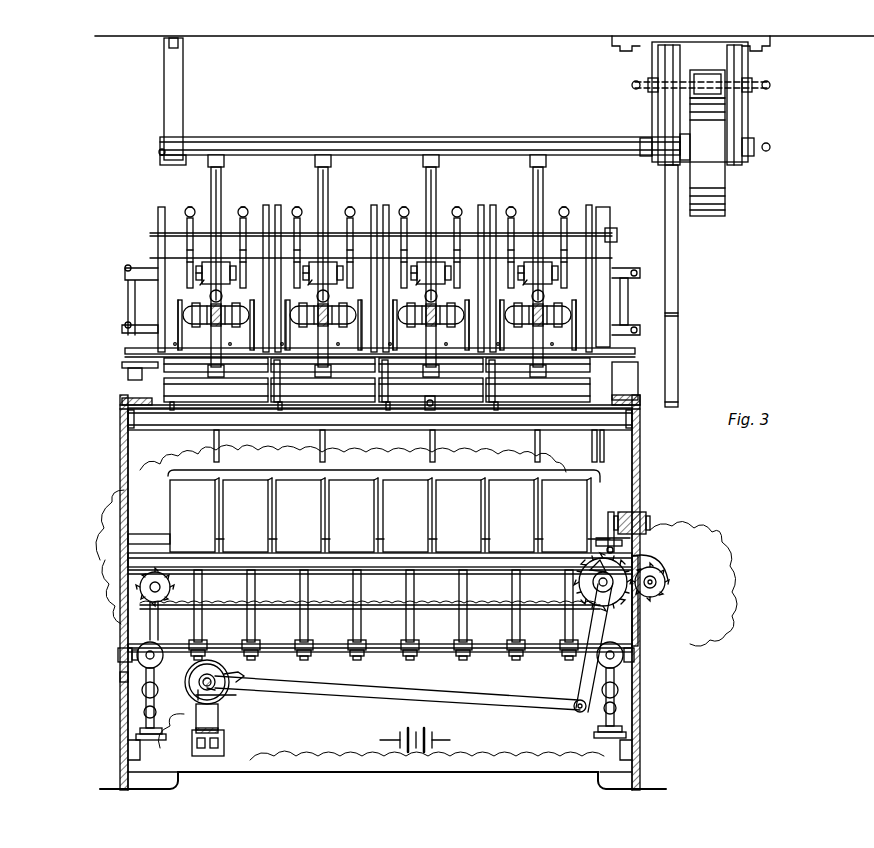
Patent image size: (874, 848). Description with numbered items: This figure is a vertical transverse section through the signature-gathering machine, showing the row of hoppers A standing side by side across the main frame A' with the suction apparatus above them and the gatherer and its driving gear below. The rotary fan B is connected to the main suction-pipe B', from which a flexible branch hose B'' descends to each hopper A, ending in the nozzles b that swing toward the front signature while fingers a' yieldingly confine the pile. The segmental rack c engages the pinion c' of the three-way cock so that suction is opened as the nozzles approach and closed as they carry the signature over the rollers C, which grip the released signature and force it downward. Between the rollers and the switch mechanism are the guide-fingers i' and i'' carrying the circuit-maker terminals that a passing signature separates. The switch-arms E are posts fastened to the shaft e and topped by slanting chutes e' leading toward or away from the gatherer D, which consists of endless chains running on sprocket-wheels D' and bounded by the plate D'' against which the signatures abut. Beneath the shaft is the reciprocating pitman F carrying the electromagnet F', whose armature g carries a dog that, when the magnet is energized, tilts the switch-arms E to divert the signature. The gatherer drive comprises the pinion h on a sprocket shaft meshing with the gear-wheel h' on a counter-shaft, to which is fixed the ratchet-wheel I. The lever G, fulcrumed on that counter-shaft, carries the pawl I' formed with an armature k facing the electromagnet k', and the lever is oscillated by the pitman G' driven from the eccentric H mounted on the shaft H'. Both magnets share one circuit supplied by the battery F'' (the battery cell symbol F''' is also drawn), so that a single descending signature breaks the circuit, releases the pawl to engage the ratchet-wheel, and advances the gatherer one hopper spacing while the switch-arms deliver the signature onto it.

The hopper A is at (383, 278).
The main frame A' is at (378, 592).
The rotary fan B is at (691, 126).
The main suction-pipe B' is at (420, 135).
The hose or flexible branch pipe B'' is at (383, 266).
The fingers a' is at (386, 234).
The nozzle b is at (377, 319).
The segmental rack c is at (350, 325).
The pinion c' is at (351, 293).
The ratchet-wheel I is at (429, 455).
The pawl I' is at (595, 540).
The rollers C is at (377, 380).
The guide-finger i' is at (403, 429).
The pin i'' is at (349, 391).
The shaft e is at (380, 658).
The slanting chutes e' is at (384, 511).
The gatherer D is at (419, 595).
The sprocket-wheels D' is at (359, 596).
The plate D'' is at (380, 547).
The switch-arms E is at (250, 618).
The pitman F is at (127, 704).
The electromagnet F' is at (636, 685).
The battery F'' is at (125, 656).
The battery F''' is at (416, 745).
The lever G is at (586, 648).
The reciprocating pitman G' is at (388, 686).
The eccentric H is at (216, 708).
The shaft H' is at (195, 678).
The armature g is at (155, 604).
The pinion h is at (662, 579).
The gear-wheel h' is at (655, 592).
The armature k is at (593, 598).
The electromagnet k' is at (632, 510).